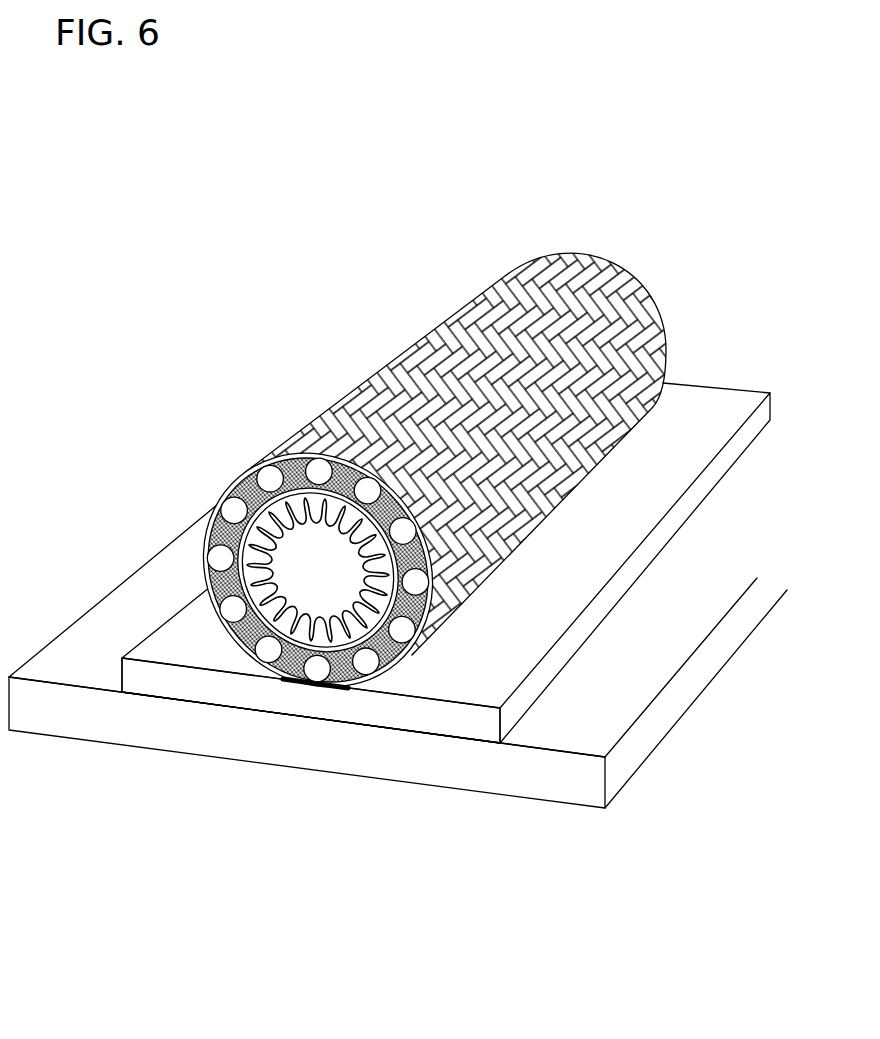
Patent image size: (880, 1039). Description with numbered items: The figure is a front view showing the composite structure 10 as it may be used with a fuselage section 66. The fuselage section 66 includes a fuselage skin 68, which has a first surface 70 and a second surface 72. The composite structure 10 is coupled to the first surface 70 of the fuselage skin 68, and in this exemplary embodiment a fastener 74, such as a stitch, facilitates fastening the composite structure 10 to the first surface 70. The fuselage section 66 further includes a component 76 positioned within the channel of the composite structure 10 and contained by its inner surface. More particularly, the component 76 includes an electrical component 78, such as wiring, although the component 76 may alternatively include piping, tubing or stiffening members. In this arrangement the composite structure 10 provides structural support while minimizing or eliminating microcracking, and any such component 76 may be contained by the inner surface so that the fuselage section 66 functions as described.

The composite structure 10 is at (435, 519).
The fuselage section 66 is at (43, 722).
The fuselage skin 68 is at (162, 683).
The first surface 70 is at (175, 638).
The second surface 72 is at (264, 712).
The fastener 74 is at (327, 690).
The component 76 is at (311, 570).
The electrical component 78 is at (248, 475).